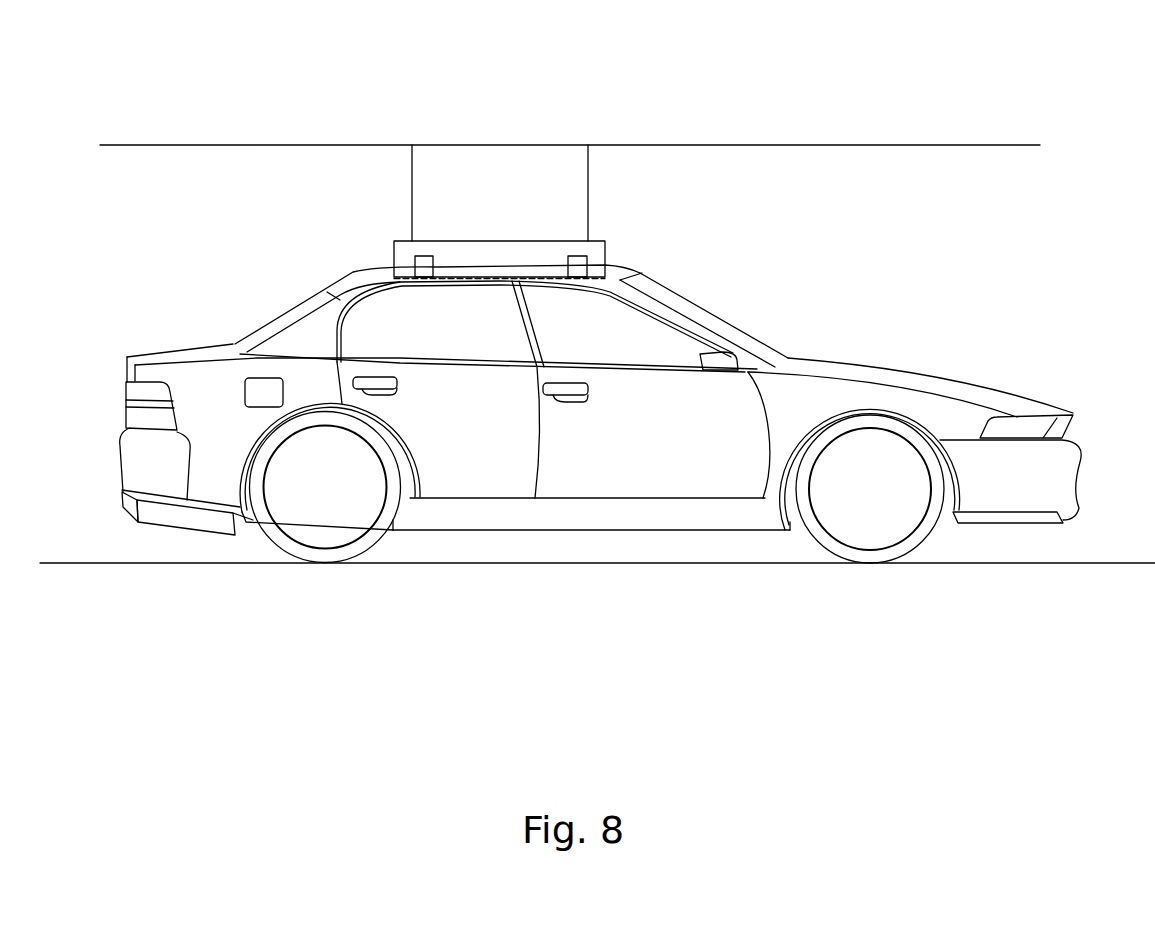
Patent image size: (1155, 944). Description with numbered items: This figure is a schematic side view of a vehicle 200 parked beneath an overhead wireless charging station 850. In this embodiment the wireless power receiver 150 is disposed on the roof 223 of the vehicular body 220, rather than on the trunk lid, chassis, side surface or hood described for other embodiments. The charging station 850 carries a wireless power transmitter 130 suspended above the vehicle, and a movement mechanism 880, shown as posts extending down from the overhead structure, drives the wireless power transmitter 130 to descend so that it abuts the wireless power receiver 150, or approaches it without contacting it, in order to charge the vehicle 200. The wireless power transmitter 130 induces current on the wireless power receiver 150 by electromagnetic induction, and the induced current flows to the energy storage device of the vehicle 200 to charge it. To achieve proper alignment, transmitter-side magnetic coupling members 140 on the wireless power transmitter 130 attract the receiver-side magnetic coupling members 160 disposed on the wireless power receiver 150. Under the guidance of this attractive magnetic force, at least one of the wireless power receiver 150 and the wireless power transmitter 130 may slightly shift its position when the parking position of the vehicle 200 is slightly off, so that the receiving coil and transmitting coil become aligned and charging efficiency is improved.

The wireless charging station 850 is at (251, 102).
The movement mechanism 880 is at (577, 184).
The wireless power transmitter 130 is at (478, 250).
The wireless power receiver 150 is at (450, 273).
The transmitter-side magnetic coupling members 140 is at (593, 258).
The receiver-side magnetic coupling members 160 is at (583, 268).
The roof 223 is at (361, 280).
The vehicle 200 is at (600, 390).
The vehicular body 220 is at (839, 368).